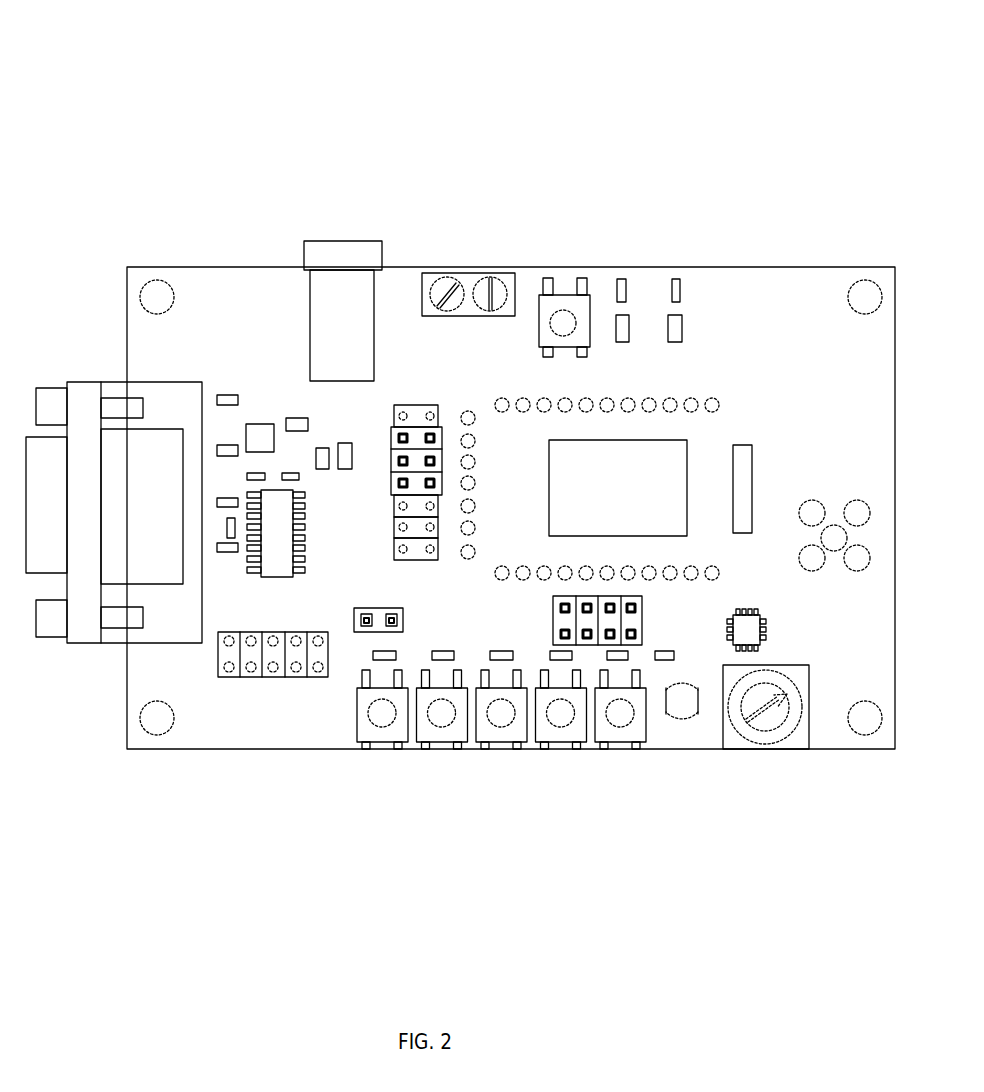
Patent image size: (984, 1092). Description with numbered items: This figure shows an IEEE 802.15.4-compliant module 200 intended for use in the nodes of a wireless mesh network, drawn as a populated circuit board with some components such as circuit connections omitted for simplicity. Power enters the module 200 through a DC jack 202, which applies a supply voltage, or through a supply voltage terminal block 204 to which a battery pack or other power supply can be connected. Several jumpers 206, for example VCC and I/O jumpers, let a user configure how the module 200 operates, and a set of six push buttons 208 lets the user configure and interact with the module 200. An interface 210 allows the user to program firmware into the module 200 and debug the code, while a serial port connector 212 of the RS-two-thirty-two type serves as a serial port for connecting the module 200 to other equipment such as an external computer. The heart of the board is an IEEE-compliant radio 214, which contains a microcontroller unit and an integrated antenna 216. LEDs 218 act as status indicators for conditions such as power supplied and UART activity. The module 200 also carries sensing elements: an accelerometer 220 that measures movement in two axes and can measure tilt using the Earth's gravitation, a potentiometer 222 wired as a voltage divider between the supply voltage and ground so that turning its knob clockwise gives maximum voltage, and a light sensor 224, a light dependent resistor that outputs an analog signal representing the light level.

The IEEE 802.15.4-compliant module 200 is at (158, 67).
The DC jack 202 is at (325, 305).
The supply voltage terminal block 204 is at (472, 280).
The jumpers 206 is at (407, 520).
The push buttons 208 is at (562, 323).
The interface 210 is at (269, 653).
The RS-232 connector 212 is at (130, 543).
The 802.15.4 compliant radio 214 is at (668, 457).
The antenna 216 is at (743, 475).
The LEDs 218 is at (676, 327).
The accelerometer 220 is at (757, 622).
The potentiometer 222 is at (771, 722).
The light sensor 224 is at (683, 708).